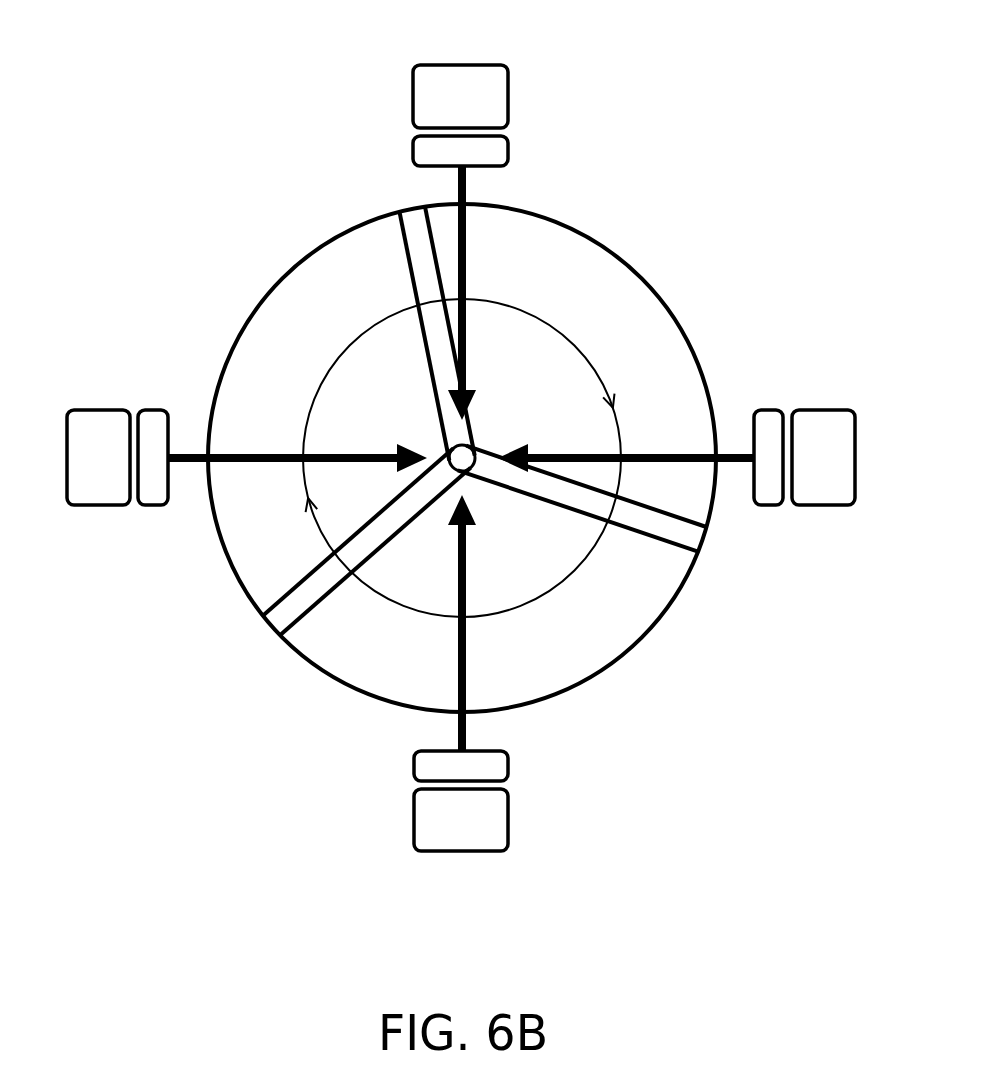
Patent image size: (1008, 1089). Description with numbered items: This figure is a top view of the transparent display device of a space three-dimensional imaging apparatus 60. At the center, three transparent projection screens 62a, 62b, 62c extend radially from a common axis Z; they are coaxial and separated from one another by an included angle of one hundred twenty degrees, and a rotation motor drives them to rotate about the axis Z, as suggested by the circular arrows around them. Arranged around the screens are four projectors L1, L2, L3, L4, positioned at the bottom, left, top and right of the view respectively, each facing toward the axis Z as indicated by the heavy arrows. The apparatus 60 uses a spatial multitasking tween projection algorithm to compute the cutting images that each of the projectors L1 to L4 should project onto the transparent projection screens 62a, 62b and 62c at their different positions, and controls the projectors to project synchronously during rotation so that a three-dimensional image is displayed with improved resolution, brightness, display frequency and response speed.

The space three-dimensional imaging apparatus 60 is at (790, 929).
The transparent projection screen 62a is at (310, 612).
The transparent projection screen 62b is at (403, 248).
The transparent projection screen 62c is at (663, 547).
The projector L1 is at (462, 852).
The projector L2 is at (100, 505).
The projector L3 is at (460, 63).
The projector L4 is at (822, 505).